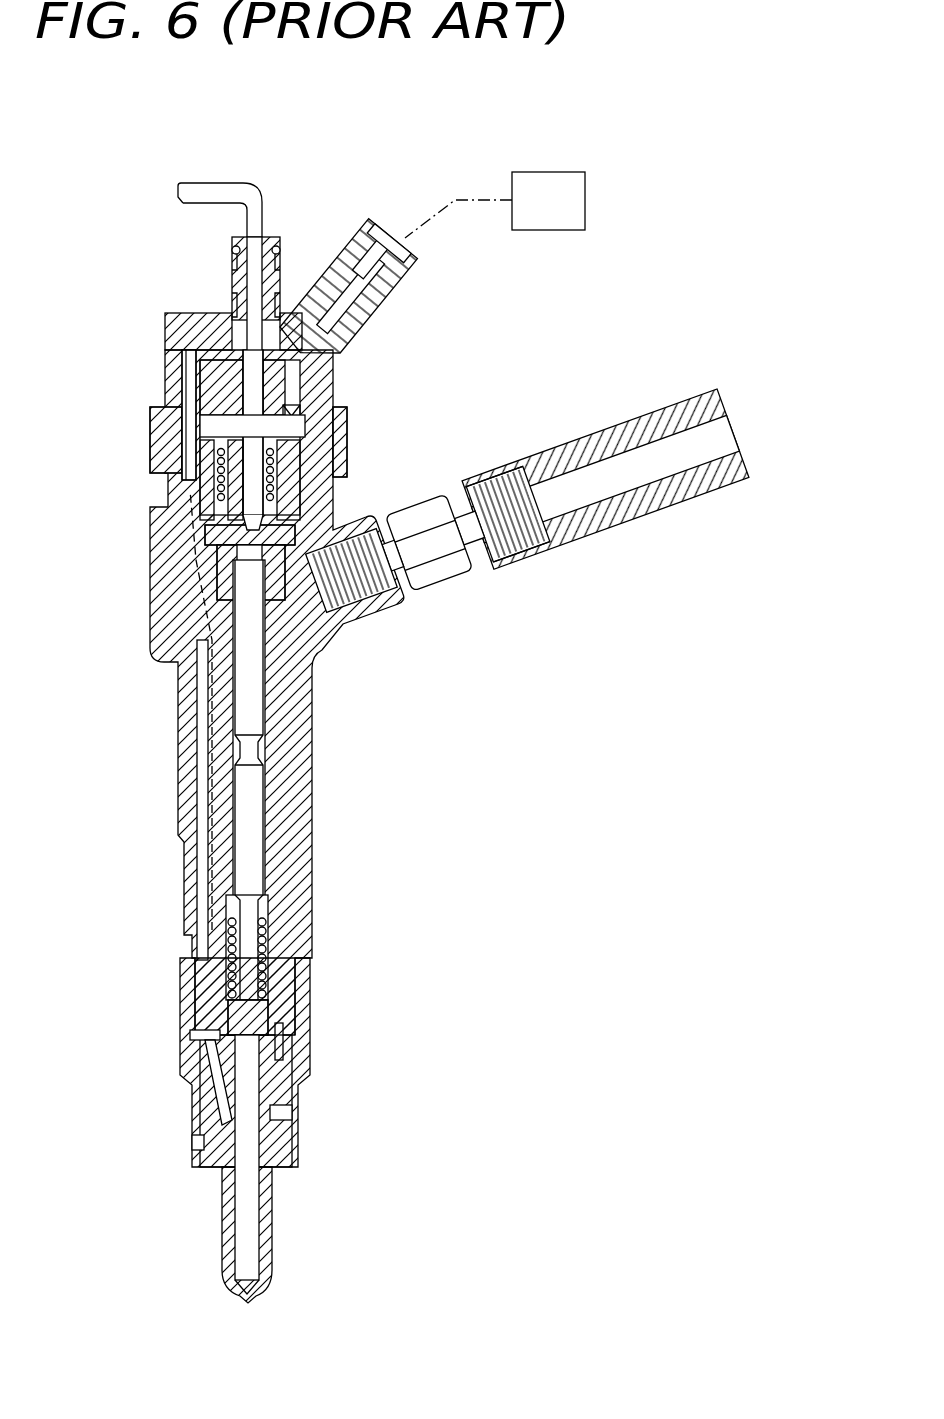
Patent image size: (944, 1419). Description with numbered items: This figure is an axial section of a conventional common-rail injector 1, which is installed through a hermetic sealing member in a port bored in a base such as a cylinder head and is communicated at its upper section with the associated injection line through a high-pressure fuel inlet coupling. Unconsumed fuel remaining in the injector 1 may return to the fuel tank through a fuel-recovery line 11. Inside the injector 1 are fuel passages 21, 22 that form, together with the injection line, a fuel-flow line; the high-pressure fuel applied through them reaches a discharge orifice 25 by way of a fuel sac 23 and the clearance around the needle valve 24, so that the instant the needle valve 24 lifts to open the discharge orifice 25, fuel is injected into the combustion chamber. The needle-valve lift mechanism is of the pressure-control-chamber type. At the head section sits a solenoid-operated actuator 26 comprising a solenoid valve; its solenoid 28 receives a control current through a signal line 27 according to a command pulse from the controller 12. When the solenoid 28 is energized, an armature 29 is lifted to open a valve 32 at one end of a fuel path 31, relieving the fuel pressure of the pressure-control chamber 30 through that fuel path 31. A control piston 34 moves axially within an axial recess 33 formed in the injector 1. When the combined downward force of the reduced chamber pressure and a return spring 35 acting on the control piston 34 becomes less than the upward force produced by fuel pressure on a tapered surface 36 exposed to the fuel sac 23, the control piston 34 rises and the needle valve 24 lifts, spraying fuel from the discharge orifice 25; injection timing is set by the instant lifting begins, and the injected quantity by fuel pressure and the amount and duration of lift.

The injector 1 is at (318, 718).
The fuel-recovery line 11 is at (213, 190).
The controller 12 is at (565, 186).
The fuel passage 21 is at (215, 740).
The fuel passage 22 is at (220, 1085).
The fuel sac 23 is at (200, 1138).
The needle valve 24 is at (252, 1213).
The discharge orifice 25 is at (255, 1293).
The solenoid-operated actuator 26 is at (317, 397).
The signal line 27 is at (330, 295).
The solenoid 28 is at (180, 390).
The armature 29 is at (160, 430).
The pressure-control chamber 30 is at (240, 548).
The fuel path 31 is at (227, 535).
The valve 32 is at (213, 510).
The axial recess 33 is at (265, 743).
The control piston 34 is at (250, 695).
The return spring 35 is at (235, 948).
The tapered surface 36 is at (283, 1125).